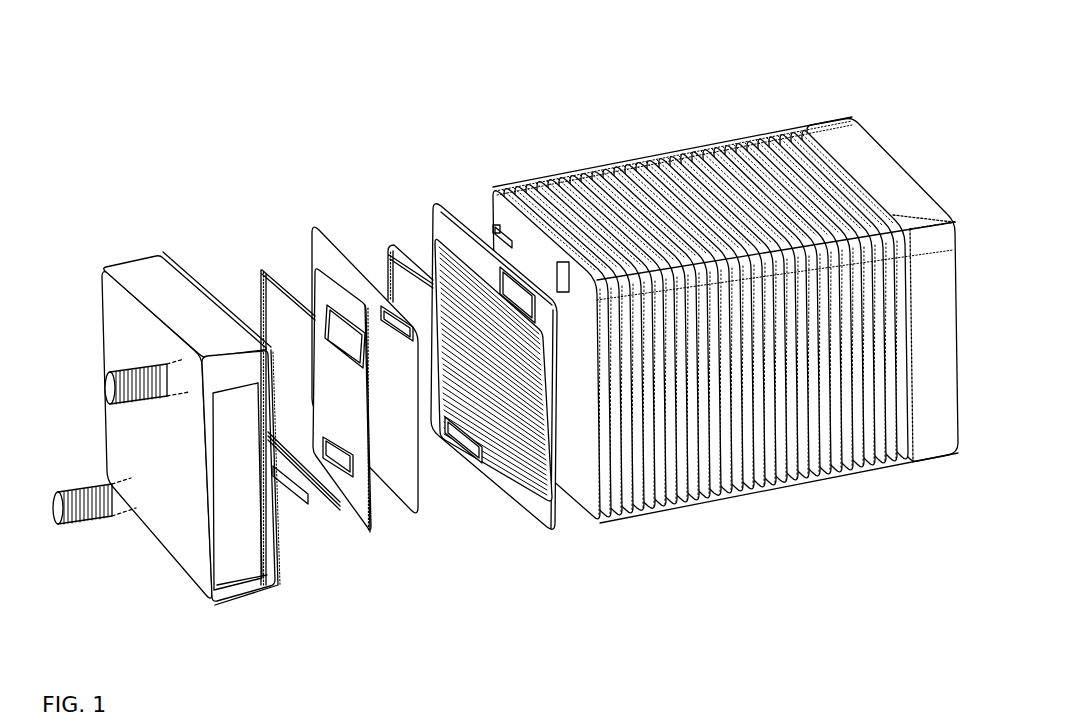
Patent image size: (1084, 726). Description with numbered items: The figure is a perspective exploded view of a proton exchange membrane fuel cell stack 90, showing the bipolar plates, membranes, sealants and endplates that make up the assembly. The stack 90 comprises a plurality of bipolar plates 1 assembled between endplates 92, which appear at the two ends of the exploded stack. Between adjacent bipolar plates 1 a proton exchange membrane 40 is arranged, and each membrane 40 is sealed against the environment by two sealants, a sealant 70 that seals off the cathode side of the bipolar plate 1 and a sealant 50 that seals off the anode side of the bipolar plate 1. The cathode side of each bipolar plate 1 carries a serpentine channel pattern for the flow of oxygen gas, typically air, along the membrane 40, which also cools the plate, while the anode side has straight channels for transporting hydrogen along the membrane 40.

The PEM fuel cell stack 90 is at (653, 138).
The endplates 92 is at (946, 441).
The bipolar plate 1 is at (537, 540).
The sealant 50 is at (490, 540).
The proton exchange membrane 40 is at (410, 553).
The sealant 70 is at (360, 540).